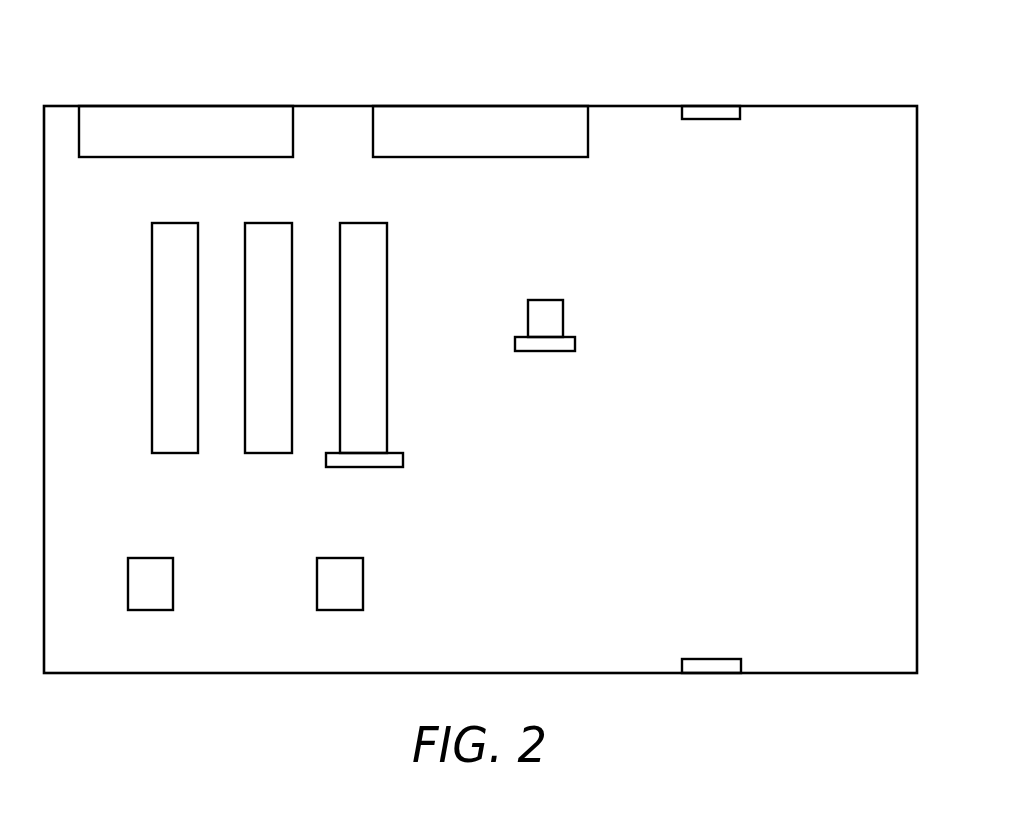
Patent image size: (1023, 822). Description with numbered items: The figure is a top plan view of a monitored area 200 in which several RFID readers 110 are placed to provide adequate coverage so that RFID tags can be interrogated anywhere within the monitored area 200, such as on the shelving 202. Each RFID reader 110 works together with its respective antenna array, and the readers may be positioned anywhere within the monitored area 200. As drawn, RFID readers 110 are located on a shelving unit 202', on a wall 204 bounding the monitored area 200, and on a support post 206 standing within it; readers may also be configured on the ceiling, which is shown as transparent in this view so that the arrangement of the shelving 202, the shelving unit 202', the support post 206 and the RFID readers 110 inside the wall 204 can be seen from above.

The monitored area 200 is at (942, 159).
The shelving 202 is at (333, 279).
The shelving unit 202' is at (393, 345).
The wall 204 is at (899, 106).
The support post 206 is at (565, 318).
The RFID reader 110 is at (712, 121).